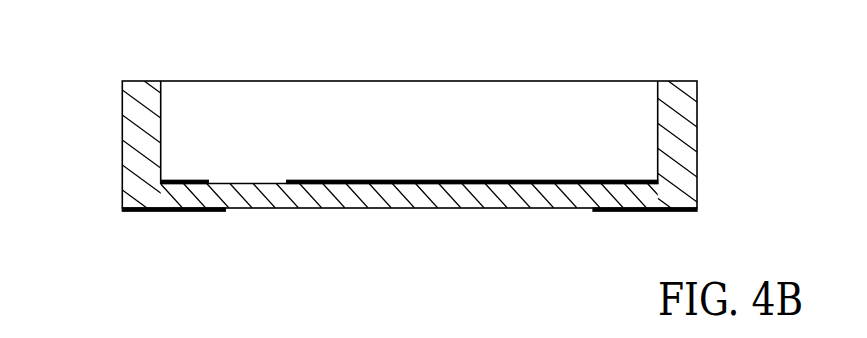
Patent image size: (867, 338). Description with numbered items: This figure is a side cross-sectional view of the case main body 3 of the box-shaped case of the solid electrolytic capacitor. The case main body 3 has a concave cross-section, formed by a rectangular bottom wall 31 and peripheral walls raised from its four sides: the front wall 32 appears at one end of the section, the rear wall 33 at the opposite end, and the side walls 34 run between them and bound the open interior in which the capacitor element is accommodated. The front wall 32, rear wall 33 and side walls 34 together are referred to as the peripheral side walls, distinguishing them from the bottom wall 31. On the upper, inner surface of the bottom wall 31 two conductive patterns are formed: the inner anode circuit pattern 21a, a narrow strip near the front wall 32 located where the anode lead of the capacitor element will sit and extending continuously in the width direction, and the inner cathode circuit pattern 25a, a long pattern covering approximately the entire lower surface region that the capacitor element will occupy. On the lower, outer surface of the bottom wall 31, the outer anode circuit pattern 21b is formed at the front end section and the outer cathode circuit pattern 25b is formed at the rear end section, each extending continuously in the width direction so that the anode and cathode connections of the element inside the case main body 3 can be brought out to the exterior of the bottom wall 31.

The case main body 3 is at (688, 57).
The inner anode circuit pattern 21a is at (190, 181).
The outer anode circuit pattern 21b is at (137, 213).
The inner cathode circuit pattern 25a is at (522, 181).
The outer cathode circuit pattern 25b is at (621, 212).
The bottom wall 31 is at (373, 199).
The front wall 32 is at (134, 131).
The rear wall 33 is at (685, 142).
The side wall 34 is at (392, 122).